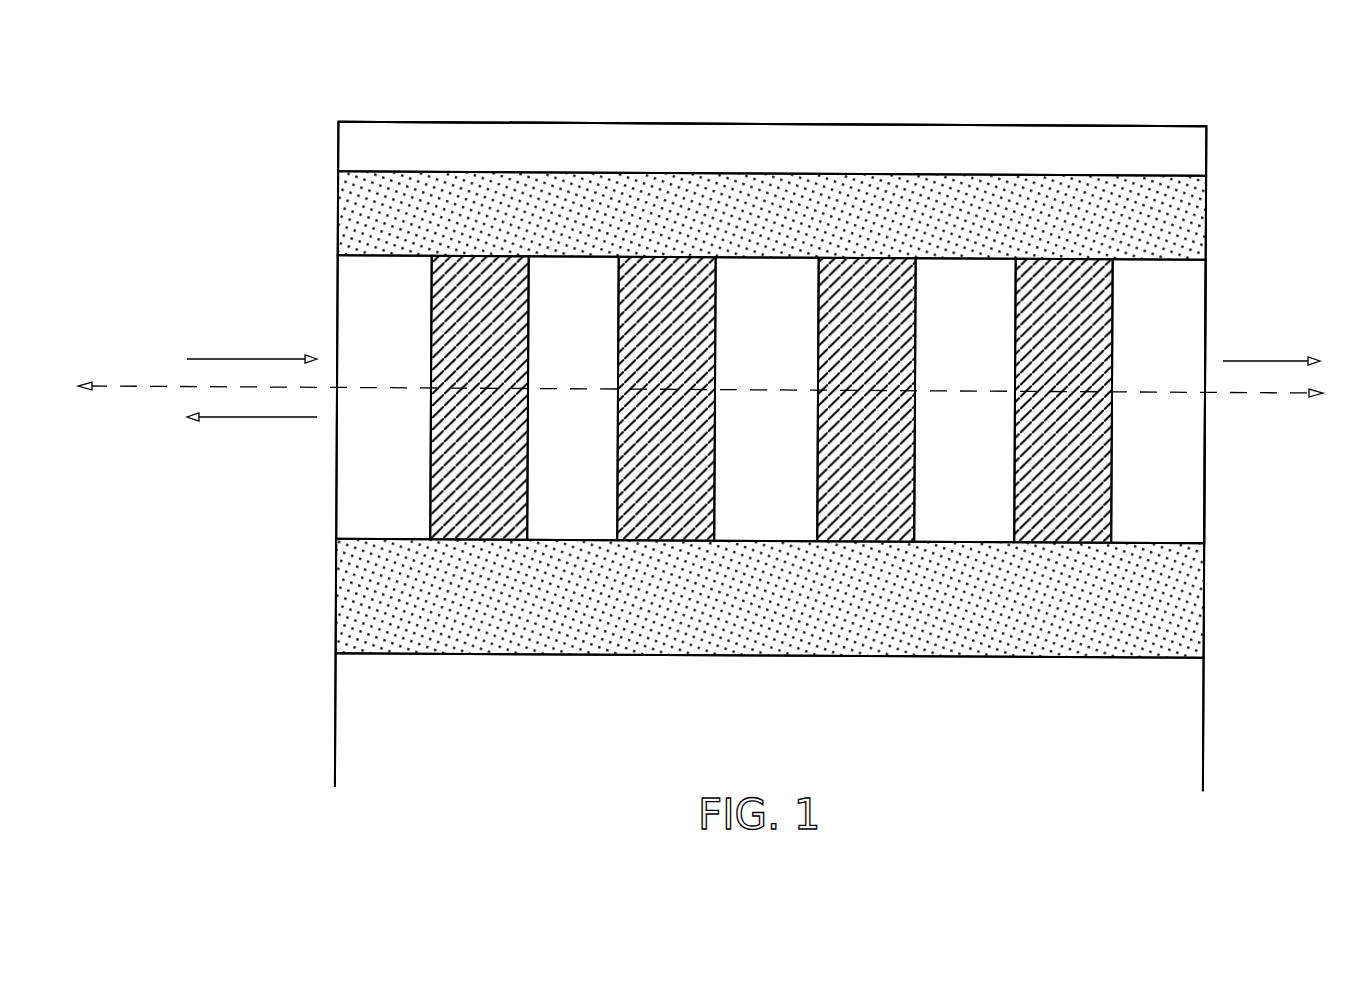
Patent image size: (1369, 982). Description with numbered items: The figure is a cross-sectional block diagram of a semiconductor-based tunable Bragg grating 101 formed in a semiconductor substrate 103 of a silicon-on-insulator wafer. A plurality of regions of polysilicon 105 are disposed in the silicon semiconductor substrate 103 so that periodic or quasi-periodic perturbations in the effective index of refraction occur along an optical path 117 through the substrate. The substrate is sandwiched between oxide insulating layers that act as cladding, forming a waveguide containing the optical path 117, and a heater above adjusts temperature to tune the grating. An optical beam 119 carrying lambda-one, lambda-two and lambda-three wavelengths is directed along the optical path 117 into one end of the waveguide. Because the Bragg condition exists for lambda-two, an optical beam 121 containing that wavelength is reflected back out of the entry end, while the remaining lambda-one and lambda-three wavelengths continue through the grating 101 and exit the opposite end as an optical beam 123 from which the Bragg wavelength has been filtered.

The tunable Bragg grating 101 is at (1216, 49).
The semiconductor substrate 103 is at (399, 526).
The polysilicon regions 105 is at (492, 526).
The optical path 117 is at (113, 384).
The optical beam 119 is at (193, 354).
The optical beam 121 is at (223, 427).
The optical beam 123 is at (1296, 314).